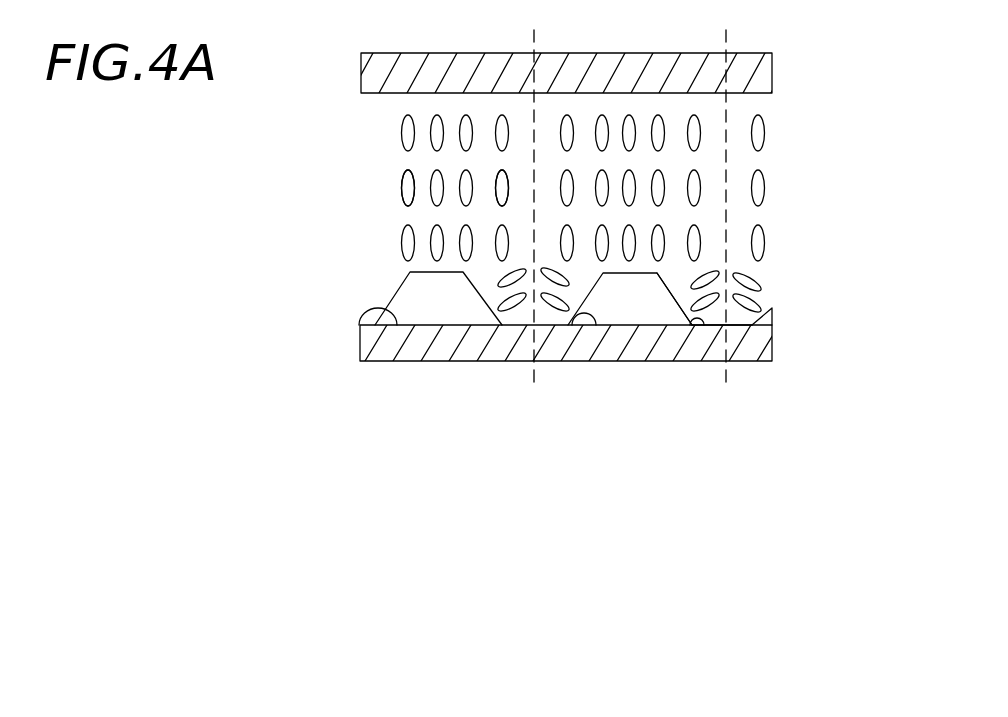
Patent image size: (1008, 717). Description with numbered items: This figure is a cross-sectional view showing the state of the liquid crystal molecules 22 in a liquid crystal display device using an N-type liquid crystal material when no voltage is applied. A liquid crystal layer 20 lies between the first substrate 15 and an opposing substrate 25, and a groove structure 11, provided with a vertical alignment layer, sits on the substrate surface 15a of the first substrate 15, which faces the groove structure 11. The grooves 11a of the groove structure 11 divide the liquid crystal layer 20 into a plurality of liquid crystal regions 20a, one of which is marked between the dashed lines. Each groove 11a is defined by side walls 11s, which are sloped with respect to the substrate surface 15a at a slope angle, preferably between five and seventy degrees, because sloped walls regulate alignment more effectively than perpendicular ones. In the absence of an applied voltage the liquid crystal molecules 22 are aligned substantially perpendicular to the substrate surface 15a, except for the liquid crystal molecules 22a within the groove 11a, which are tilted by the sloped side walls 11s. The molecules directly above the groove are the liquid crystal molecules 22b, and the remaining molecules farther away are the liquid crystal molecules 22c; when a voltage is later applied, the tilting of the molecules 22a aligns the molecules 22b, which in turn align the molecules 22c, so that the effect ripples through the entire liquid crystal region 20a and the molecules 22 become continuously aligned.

The groove structure 11 is at (356, 296).
The side walls 11s is at (672, 293).
The groove 11a is at (732, 328).
The first substrate 15 is at (772, 340).
The substrate surface 15a is at (375, 311).
The liquid crystal layer 20 is at (566, 291).
The liquid crystal region 20a is at (718, 44).
The liquid crystal molecules 22 is at (623, 307).
The liquid crystal molecules within the groove 22a is at (522, 300).
The liquid crystal molecules directly above the groove 22b is at (499, 187).
The remaining liquid crystal molecules 22c is at (411, 183).
The counter substrate 25 is at (760, 78).